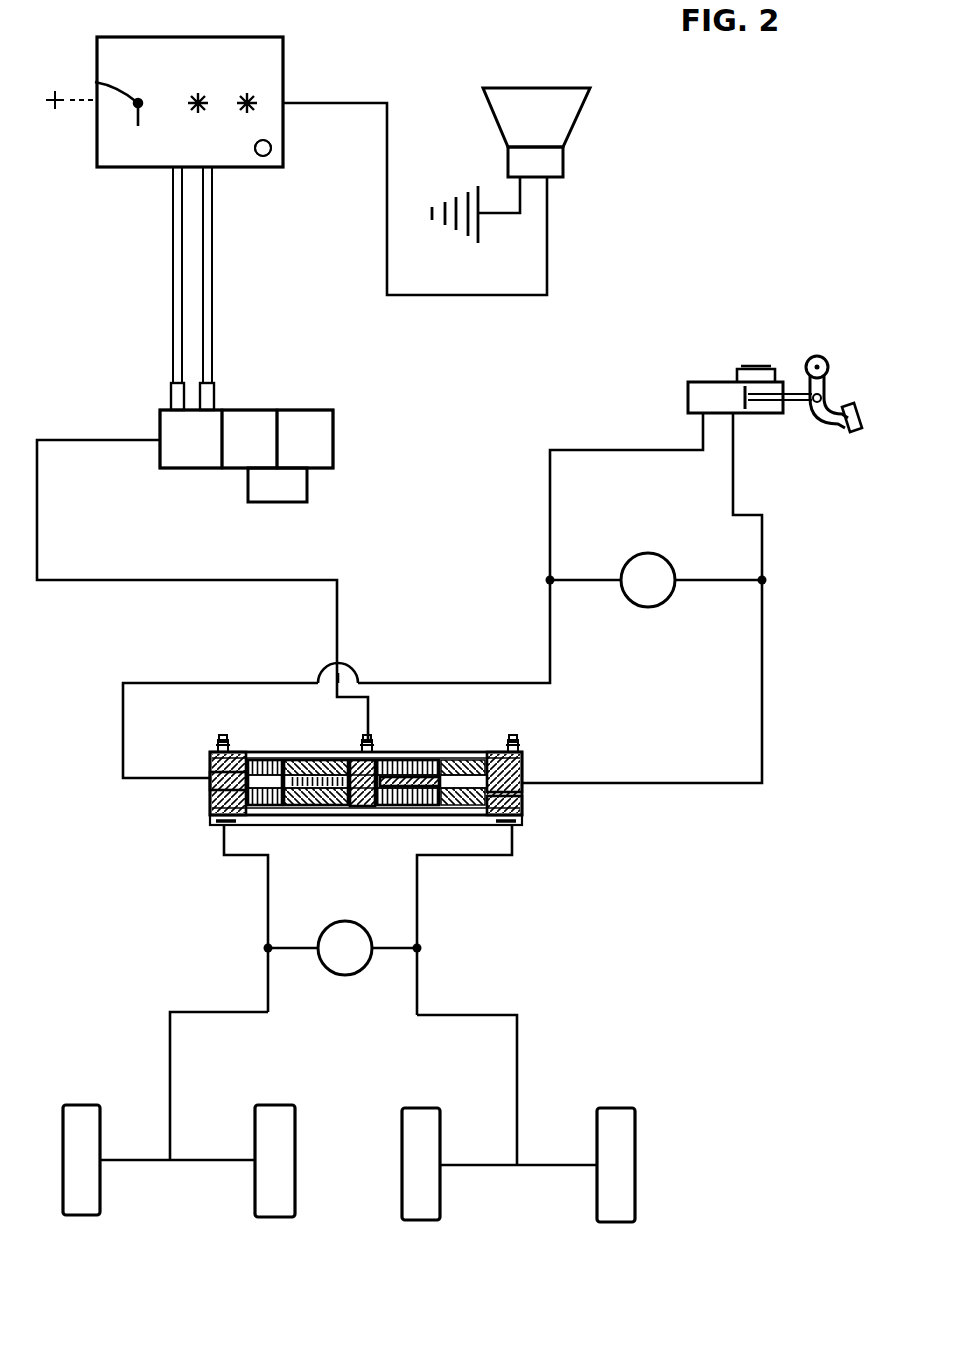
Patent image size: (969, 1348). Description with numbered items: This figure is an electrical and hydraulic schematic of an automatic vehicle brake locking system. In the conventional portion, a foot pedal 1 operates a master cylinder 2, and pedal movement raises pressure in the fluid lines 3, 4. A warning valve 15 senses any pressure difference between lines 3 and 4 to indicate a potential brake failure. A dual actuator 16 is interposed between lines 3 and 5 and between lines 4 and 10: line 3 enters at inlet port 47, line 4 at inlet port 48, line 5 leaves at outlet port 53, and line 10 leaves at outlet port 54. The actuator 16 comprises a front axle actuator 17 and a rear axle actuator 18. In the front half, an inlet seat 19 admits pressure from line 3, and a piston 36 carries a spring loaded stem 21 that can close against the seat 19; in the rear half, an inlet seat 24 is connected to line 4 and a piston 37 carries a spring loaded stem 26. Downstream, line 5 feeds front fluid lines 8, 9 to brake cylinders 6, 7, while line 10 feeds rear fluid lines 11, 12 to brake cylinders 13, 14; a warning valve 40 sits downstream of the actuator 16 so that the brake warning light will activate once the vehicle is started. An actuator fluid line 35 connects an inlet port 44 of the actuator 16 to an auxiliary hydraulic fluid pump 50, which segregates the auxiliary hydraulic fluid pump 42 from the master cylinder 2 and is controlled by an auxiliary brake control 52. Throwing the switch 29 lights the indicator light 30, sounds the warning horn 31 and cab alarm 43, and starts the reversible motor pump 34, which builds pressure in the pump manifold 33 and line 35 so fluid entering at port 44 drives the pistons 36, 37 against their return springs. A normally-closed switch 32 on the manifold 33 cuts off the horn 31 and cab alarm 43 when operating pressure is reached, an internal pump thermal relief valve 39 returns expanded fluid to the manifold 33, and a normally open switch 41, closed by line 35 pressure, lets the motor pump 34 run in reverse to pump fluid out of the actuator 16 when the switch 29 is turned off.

The foot pedal 1 is at (835, 428).
The master cylinder 2 is at (708, 384).
The fluid line 3 is at (612, 455).
The fluid line 4 is at (762, 752).
The brake line 5 is at (205, 1012).
The brake cylinder 6 is at (80, 1107).
The brake cylinder 7 is at (272, 1107).
The front fluid line 8 is at (126, 1162).
The front fluid line 9 is at (215, 1162).
The fluid line 10 is at (488, 1020).
The rear fluid line 11 is at (467, 1167).
The rear fluid line 12 is at (549, 1167).
The brake cylinder 13 is at (420, 1110).
The brake cylinder 14 is at (613, 1110).
The warning valve 15 is at (646, 553).
The dual actuator 16 is at (410, 745).
The front axle actuator 17 is at (205, 765).
The rear axle actuator 18 is at (520, 757).
The inlet seat 19 is at (210, 804).
The spring loaded stem 21 is at (265, 762).
The inlet seat 24 is at (522, 808).
The spring loaded stem 26 is at (468, 762).
The switch 29 is at (99, 81).
The indicator light 30 is at (258, 96).
The warning horn 31 is at (573, 100).
The normally-closed switch 32 is at (213, 393).
The pump manifold 33 is at (165, 458).
The reversible motor pump 34 is at (308, 416).
The actuator fluid line 35 is at (195, 582).
The piston 36 is at (325, 762).
The piston 37 is at (410, 815).
The internal pump thermal relief valve 39 is at (273, 502).
The warning valve 40 is at (343, 921).
The normally open switch 41 is at (170, 395).
The auxiliary hydraulic fluid pump 42 is at (232, 462).
The cab alarm 43 is at (268, 155).
The inlet port 44 is at (355, 805).
The inlet port 47 is at (210, 776).
The inlet port 48 is at (522, 780).
The auxiliary hydraulic fluid pump 50 is at (350, 446).
The auxiliary brake control 52 is at (98, 322).
The outlet port 53 is at (218, 830).
The outlet port 54 is at (520, 832).